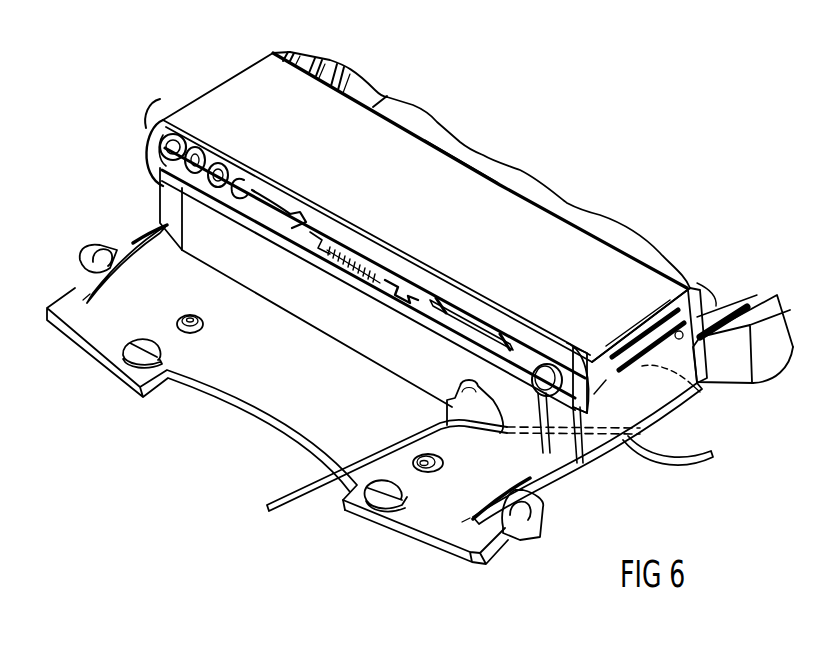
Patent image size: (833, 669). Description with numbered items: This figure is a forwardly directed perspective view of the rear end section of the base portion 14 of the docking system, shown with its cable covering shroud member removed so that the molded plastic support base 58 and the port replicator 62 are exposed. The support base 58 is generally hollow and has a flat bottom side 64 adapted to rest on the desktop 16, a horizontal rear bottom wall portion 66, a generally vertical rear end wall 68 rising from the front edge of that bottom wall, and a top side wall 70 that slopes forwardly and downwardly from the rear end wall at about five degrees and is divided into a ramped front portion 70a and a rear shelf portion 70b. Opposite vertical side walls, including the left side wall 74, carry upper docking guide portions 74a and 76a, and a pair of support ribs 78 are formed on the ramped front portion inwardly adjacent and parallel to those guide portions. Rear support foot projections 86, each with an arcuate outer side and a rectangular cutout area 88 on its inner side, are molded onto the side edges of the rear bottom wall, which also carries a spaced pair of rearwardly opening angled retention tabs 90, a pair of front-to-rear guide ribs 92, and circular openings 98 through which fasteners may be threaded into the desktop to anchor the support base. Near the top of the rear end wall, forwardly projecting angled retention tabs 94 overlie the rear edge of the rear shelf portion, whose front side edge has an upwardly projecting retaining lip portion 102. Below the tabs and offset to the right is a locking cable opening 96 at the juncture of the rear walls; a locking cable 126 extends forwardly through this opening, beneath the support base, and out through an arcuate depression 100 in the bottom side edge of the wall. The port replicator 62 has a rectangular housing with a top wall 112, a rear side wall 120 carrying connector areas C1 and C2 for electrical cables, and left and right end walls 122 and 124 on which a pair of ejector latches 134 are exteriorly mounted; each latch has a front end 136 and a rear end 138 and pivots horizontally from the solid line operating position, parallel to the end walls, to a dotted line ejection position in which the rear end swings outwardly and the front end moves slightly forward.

The base portion 14 is at (465, 68).
The desktop 16 is at (203, 100).
The support base 58 is at (160, 202).
The port replicator 62 is at (510, 187).
The bottom side 64 is at (770, 373).
The rear bottom wall portion 66 is at (292, 374).
The rear end wall 68 is at (302, 307).
The top side wall 70 is at (662, 252).
The ramped front portion 70a is at (568, 208).
The rear shelf portion 70b is at (577, 350).
The left vertical side wall 74 is at (773, 338).
The upper docking guide portion 74a is at (763, 293).
The upper docking guide portion 76a is at (303, 47).
The support ribs 78 is at (327, 56).
The rear support foot projections 86 is at (80, 247).
The rectangular cutout area 88 is at (83, 300).
The angled retention tabs 90 is at (137, 346).
The guide ribs 92 is at (142, 253).
The angled retention tabs 94 is at (227, 163).
The locking cable opening 96 is at (455, 384).
The circular openings 98 is at (197, 315).
The arcuate depression 100 is at (627, 442).
The retaining lip portion 102 is at (730, 290).
The top wall 112 is at (464, 236).
The rear side wall 120 is at (460, 313).
The left end wall 122 is at (540, 402).
The right end wall 124 is at (165, 150).
The locking cable 126 is at (286, 497).
The ejector latches 134 is at (712, 401).
The front end 136 is at (697, 283).
The rear end 138 is at (162, 147).
The connector area C1 is at (198, 146).
The connector area C2 is at (241, 176).